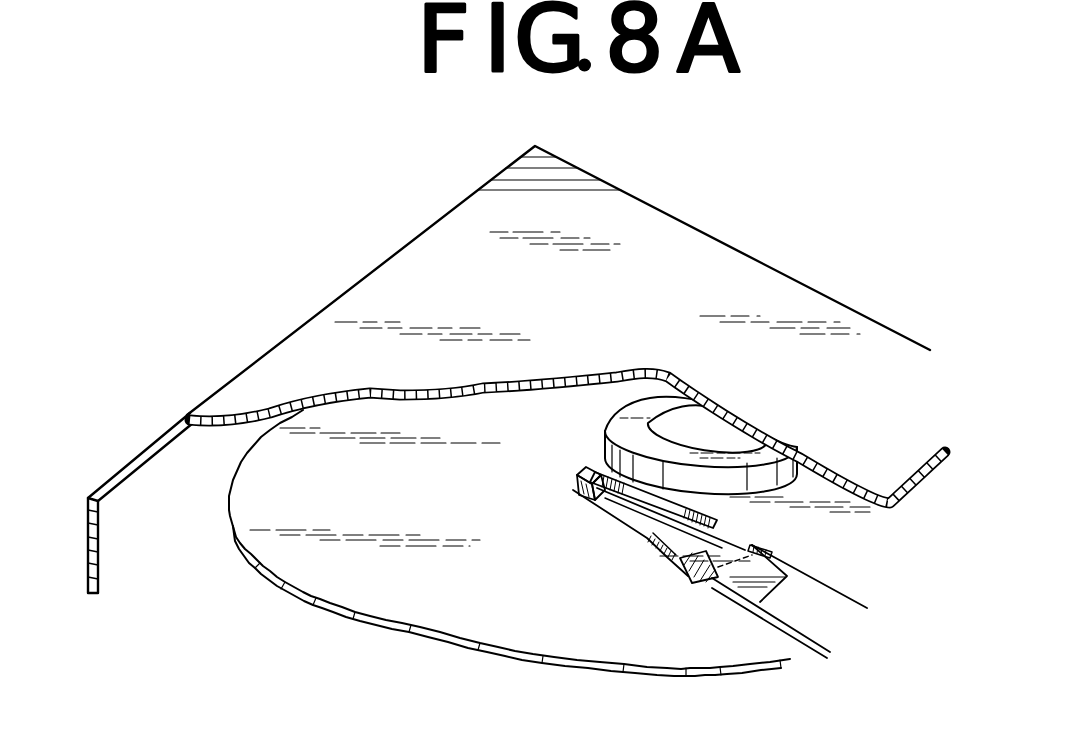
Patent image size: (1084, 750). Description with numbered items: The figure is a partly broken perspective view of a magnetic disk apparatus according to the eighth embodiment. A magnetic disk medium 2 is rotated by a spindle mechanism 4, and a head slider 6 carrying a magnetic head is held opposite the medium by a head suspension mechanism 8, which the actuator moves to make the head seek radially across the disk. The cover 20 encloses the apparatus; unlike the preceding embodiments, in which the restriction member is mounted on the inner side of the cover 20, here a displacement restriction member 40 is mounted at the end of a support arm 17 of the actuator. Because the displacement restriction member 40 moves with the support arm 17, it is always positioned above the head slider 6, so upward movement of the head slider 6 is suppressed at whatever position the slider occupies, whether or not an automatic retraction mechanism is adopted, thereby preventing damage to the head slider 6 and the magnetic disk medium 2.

The magnetic disk medium 2 is at (300, 567).
The spindle mechanism 4 is at (617, 418).
The head slider 6 is at (580, 497).
The head suspension mechanism 8 is at (643, 545).
The support arm 17 is at (820, 605).
The cover 20 is at (707, 248).
The displacement restriction member 40 is at (712, 557).